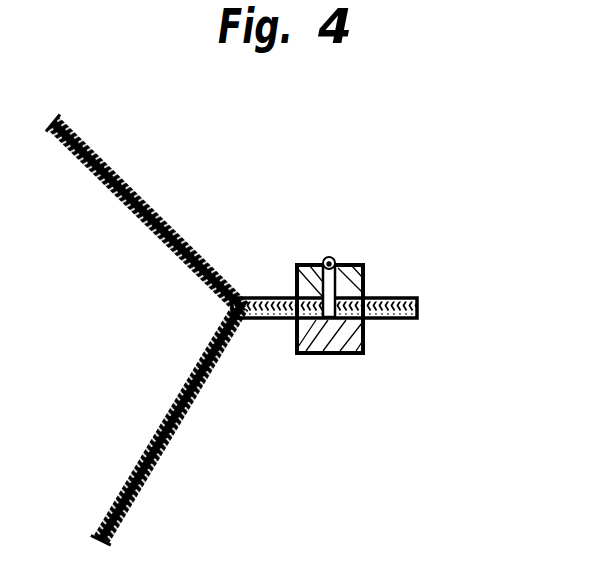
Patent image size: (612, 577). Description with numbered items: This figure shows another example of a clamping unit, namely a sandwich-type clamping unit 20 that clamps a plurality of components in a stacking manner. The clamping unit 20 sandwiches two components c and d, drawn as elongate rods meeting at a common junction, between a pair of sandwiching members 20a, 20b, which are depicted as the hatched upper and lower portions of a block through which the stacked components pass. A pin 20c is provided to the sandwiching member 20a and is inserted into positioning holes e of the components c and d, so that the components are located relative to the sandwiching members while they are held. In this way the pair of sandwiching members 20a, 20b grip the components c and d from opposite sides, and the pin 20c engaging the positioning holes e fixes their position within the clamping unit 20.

The sandwich-type clamping unit 20 is at (353, 337).
The sandwiching member 20a is at (366, 344).
The sandwiching member 20b is at (366, 265).
The pin 20c is at (331, 258).
The positioning hole e is at (330, 320).
The component c is at (170, 440).
The component d is at (148, 197).